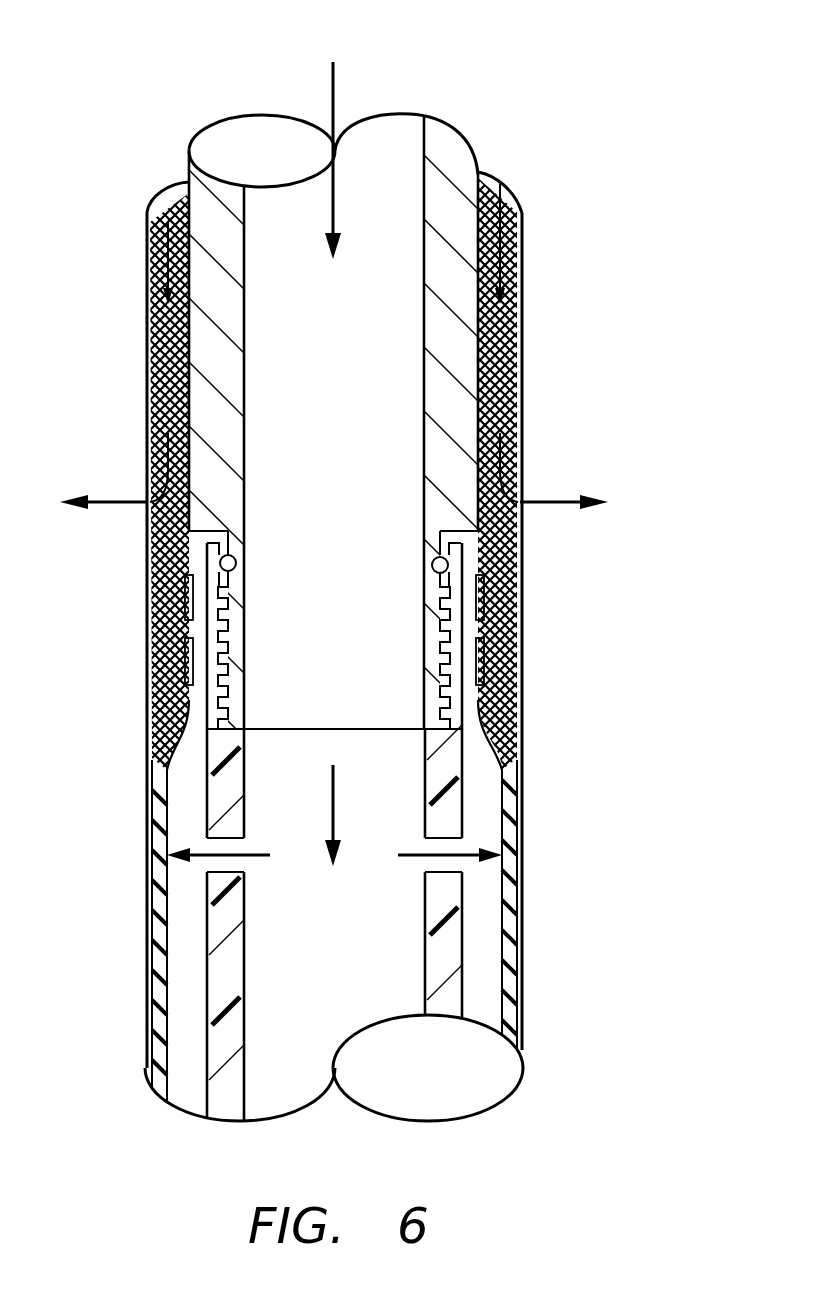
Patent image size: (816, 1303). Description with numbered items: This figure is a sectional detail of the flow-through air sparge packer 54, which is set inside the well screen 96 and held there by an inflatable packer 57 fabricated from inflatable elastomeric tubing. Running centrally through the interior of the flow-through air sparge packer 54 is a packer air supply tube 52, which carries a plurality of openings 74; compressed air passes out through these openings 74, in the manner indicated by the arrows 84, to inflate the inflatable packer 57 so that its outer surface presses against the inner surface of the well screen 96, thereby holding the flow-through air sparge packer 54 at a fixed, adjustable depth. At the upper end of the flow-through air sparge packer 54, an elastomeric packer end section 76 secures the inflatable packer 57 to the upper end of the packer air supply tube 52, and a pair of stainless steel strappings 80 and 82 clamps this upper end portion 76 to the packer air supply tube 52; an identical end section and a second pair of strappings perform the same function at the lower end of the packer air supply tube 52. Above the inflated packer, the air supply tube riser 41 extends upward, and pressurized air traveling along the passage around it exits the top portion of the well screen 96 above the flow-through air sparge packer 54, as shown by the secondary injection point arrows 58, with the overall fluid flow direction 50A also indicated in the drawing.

The fluid flow direction 50A is at (332, 75).
The air supply tube riser 41 is at (450, 138).
The secondary injection point arrows 58 is at (114, 500).
The well screen 96 is at (147, 595).
The elastomeric packer end section 76 is at (203, 548).
The stainless steel strapping 80 is at (200, 597).
The stainless steel strapping 82 is at (203, 672).
The openings 74 is at (232, 838).
The arrows 84 is at (248, 862).
The inflatable packer 57 is at (515, 905).
The packer air supply tube 52 is at (437, 962).
The flow-through air sparge packer 54 is at (545, 950).